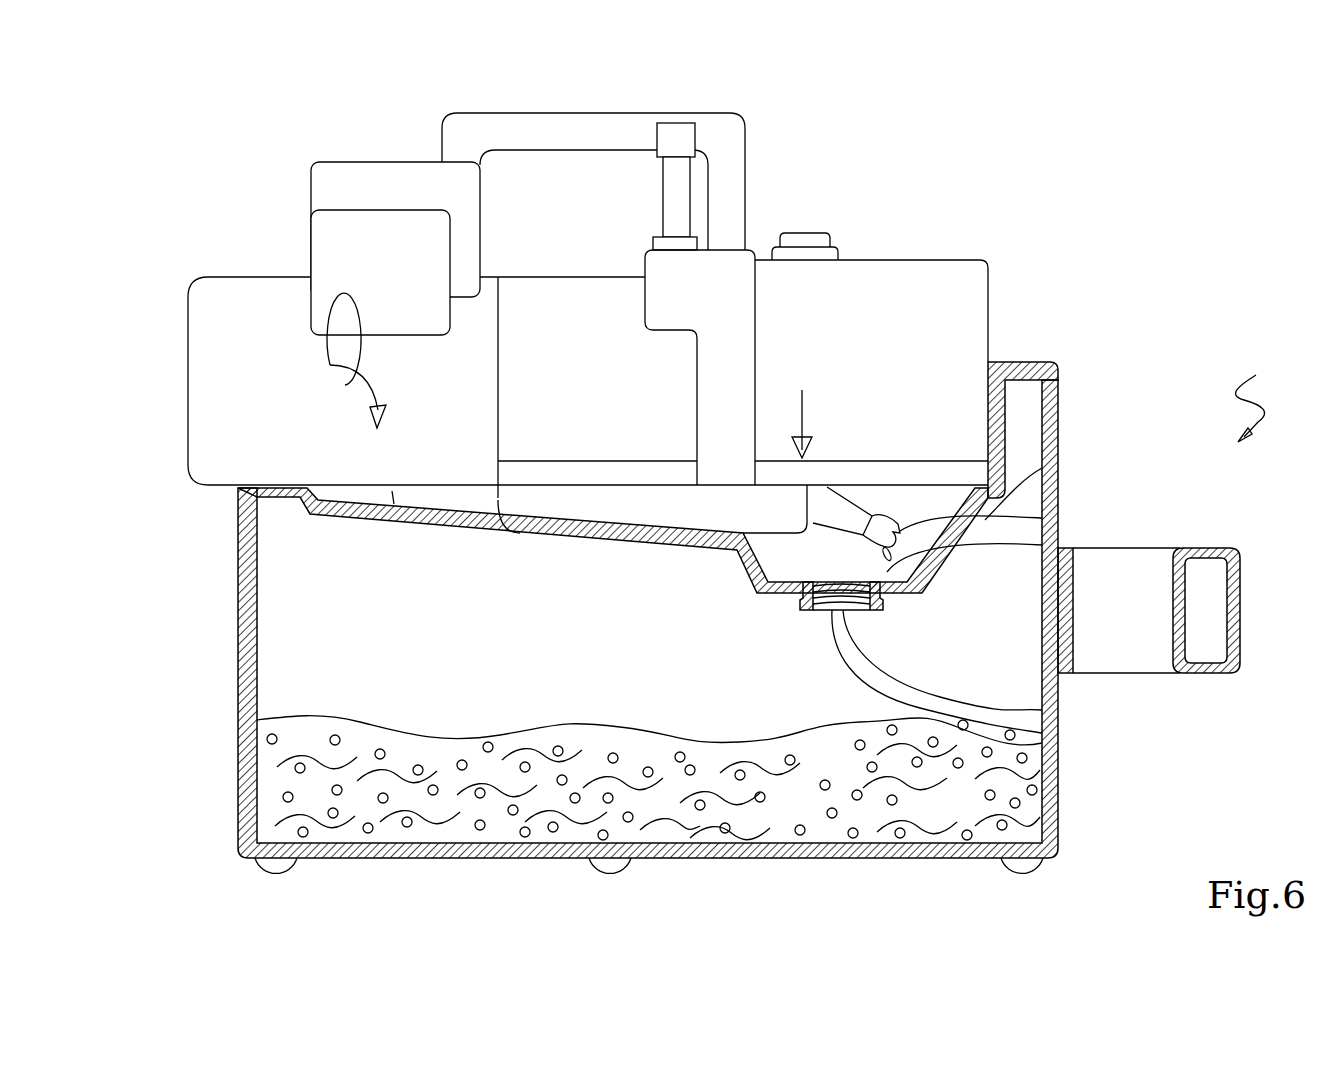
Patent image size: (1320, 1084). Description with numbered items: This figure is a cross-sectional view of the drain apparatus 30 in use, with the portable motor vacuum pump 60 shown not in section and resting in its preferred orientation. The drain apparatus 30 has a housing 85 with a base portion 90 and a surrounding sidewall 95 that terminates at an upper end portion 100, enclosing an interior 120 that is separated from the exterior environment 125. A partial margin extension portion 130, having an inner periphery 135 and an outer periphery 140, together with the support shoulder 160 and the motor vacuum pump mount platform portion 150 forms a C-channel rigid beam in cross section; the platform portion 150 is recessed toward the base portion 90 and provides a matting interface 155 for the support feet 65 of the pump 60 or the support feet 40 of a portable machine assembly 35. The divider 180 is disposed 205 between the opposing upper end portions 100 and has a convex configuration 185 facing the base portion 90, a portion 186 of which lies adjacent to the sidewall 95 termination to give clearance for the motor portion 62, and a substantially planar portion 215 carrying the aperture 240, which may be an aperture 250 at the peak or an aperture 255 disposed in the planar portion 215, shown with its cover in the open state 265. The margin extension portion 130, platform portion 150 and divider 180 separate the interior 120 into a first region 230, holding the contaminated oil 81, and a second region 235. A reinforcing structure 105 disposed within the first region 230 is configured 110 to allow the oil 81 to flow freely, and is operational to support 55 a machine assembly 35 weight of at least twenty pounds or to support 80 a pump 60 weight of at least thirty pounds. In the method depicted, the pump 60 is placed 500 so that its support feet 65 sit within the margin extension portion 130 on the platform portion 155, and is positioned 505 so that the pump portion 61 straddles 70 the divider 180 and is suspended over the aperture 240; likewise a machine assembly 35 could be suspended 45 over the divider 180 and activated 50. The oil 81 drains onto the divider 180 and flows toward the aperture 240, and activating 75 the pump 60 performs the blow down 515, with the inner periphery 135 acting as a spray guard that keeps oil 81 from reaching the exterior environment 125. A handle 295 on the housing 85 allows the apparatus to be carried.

The drain apparatus 30 is at (1263, 395).
The portable machine assembly 35 is at (889, 264).
The support feet of the portable machine assembly 40 is at (865, 464).
The suspending the portable machine assembly over the divider 45 is at (993, 503).
The activating the portable machine assembly 50 is at (259, 415).
The supporting the portable machine assembly weight 55 is at (830, 406).
The portable motor vacuum pump 60 is at (370, 161).
The pump portion 61 is at (973, 280).
The motor portion 62 is at (252, 357).
The support feet of the portable motor vacuum pump 65 is at (887, 460).
The straddling the portable motor vacuum pump over the divider 70 is at (1060, 485).
The activating the portable motor vacuum pump 75 is at (312, 403).
The supporting the portable motor vacuum pump weight 80 is at (804, 413).
The contaminated oil 81 is at (592, 619).
The housing 85 is at (592, 619).
The base portion 90 is at (847, 860).
The surrounding sidewall 95 is at (592, 619).
The upper end portion of sidewall 100 is at (554, 551).
The reinforcing structure 105 is at (554, 551).
The configuring reinforcing structure to allow fluid communication 110 is at (1013, 671).
The interior 120 is at (592, 619).
The exterior environment 125 is at (1209, 229).
The partial margin extension portion 130 is at (330, 371).
The inner periphery of margin extension portion 135 is at (987, 383).
The outer periphery of margin extension portion 140 is at (1058, 405).
The motor vacuum pump mount platform portion 150 is at (851, 405).
The matting interface of the mount platform portion 155 is at (592, 485).
The support shoulder 160 is at (468, 482).
The divider 180 is at (994, 563).
The convex configuration of divider 185 is at (554, 551).
The portion of convex configuration adjacent to sidewall termination 186 is at (565, 538).
The divider disposed between opposing upper end portions 205 is at (554, 551).
The substantially planar portion of divider 215 is at (1058, 546).
The first region 230 is at (748, 747).
The second region 235 is at (973, 814).
The aperture 240 is at (1058, 707).
The aperture positioned at the peak of the pyramid 250 is at (748, 747).
The aperture disposed in the planar portion 255 is at (748, 747).
The open state of cover 265 is at (514, 679).
The handle 295 is at (1215, 547).
The placing the portable motor vacuum pump 500 is at (487, 112).
The positioning the portable motor vacuum pump 505 is at (990, 310).
The blowing down the pump 515 is at (1058, 514).